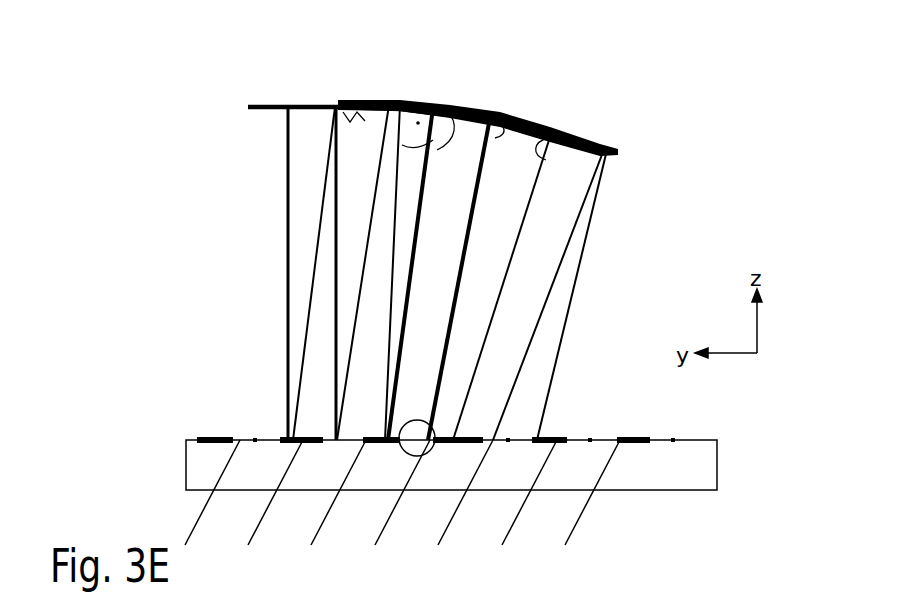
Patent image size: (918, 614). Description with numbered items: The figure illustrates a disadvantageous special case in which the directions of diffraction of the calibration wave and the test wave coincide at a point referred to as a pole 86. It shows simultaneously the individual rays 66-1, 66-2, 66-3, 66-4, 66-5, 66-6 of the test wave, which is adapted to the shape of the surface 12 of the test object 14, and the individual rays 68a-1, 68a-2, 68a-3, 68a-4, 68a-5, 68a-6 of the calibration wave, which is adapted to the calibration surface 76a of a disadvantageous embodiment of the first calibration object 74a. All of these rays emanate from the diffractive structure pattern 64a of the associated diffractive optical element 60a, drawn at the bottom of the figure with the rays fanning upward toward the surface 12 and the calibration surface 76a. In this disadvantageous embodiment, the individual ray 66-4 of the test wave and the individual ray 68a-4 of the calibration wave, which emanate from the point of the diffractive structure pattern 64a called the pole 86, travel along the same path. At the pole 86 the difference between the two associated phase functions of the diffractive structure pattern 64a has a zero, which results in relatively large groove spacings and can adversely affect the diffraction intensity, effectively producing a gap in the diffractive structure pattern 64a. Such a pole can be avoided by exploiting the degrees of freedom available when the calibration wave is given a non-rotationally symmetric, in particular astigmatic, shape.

The surface 12 is at (272, 106).
The test object 14 is at (303, 106).
The first calibration object 74a is at (379, 99).
The calibration surface 76a is at (362, 108).
The individual ray 66-1 is at (286, 262).
The individual ray 66-2 is at (334, 316).
The individual ray 66-3 is at (400, 212).
The individual ray 66-4 is at (470, 220).
The individual ray 66-5 is at (537, 190).
The individual ray 66-6 is at (572, 300).
The individual ray 68a-1 is at (322, 190).
The individual ray 68a-2 is at (369, 228).
The individual ray 68a-3 is at (452, 110).
The individual ray 68a-4 is at (508, 113).
The individual ray 68a-5 is at (545, 131).
The individual ray 68a-6 is at (572, 245).
The diffractive structure pattern 64a is at (564, 435).
The diffractive optical element 60a is at (718, 463).
The pole 86 is at (424, 456).